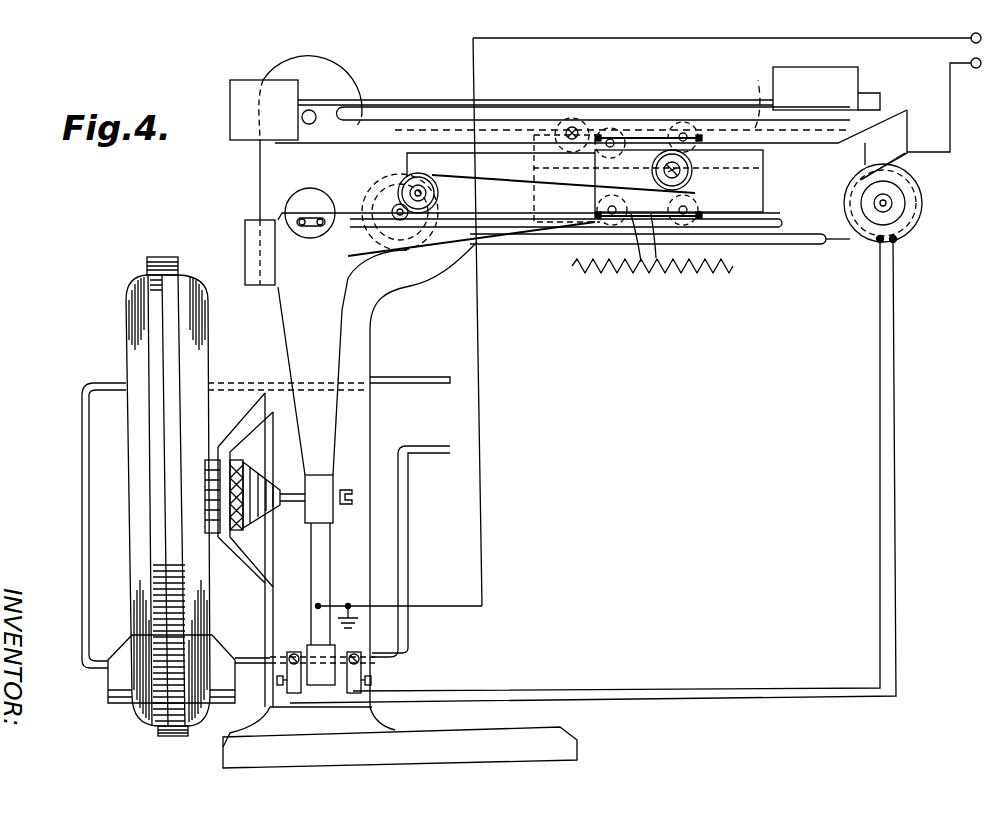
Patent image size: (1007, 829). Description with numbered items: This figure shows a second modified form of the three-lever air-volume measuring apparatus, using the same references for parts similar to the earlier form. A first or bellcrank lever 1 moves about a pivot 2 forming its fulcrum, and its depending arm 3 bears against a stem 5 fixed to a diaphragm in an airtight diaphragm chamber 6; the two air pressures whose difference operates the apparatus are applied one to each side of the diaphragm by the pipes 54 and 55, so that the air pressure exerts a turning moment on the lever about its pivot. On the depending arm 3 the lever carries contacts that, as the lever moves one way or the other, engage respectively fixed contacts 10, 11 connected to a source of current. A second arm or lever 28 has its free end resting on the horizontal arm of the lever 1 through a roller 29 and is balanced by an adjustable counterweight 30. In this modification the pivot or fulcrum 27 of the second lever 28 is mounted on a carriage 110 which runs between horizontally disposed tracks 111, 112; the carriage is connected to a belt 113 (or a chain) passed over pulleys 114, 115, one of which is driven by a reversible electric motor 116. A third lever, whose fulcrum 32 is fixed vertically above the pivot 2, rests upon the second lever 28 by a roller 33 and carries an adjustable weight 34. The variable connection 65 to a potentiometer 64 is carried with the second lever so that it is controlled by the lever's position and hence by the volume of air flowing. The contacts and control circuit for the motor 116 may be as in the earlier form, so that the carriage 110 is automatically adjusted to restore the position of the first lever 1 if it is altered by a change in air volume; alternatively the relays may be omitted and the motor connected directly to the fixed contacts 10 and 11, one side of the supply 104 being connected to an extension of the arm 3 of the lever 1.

The bellcrank lever 1 is at (348, 276).
The pivot 2 is at (310, 207).
The depending arm 3 is at (335, 426).
The stem 5 is at (287, 506).
The diaphragm chamber 6 is at (150, 447).
The fixed contact 10 is at (309, 688).
The fixed contact 11 is at (346, 688).
The pivot 27 is at (692, 172).
The second arm or lever 28 is at (517, 176).
The roller 29 is at (398, 214).
The counterweight 30 is at (763, 192).
The fulcrum 32 is at (313, 109).
The roller 33 is at (555, 133).
The weight 34 is at (859, 77).
The pipe 54 is at (405, 376).
The pipe 55 is at (428, 445).
The potentiometer 64 is at (642, 268).
The variable connection 65 is at (660, 266).
The supply 104 is at (653, 330).
The carriage 110 is at (618, 268).
The track 111 is at (758, 92).
The track 112 is at (782, 229).
The belt 113 is at (824, 245).
The pulley 114 is at (384, 180).
The pulley 115 is at (913, 194).
The reversible electric motor 116 is at (902, 224).